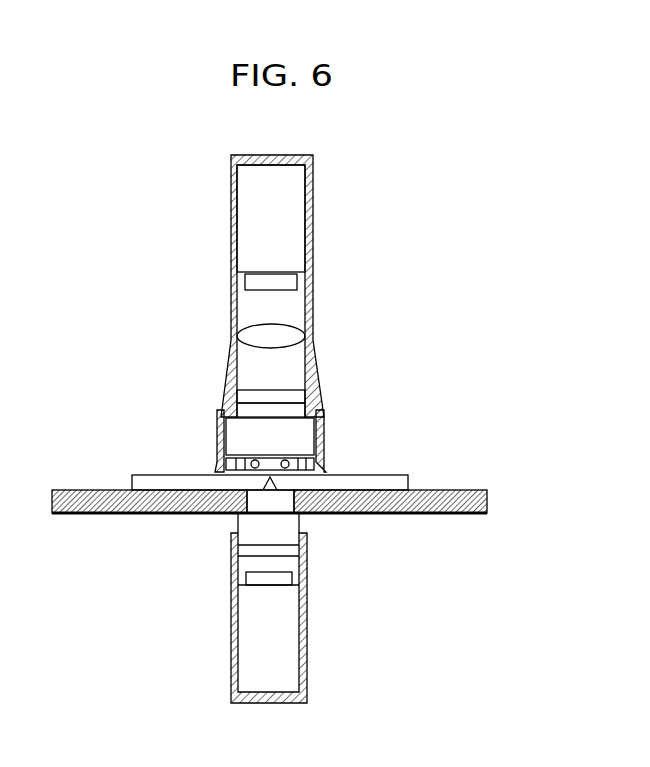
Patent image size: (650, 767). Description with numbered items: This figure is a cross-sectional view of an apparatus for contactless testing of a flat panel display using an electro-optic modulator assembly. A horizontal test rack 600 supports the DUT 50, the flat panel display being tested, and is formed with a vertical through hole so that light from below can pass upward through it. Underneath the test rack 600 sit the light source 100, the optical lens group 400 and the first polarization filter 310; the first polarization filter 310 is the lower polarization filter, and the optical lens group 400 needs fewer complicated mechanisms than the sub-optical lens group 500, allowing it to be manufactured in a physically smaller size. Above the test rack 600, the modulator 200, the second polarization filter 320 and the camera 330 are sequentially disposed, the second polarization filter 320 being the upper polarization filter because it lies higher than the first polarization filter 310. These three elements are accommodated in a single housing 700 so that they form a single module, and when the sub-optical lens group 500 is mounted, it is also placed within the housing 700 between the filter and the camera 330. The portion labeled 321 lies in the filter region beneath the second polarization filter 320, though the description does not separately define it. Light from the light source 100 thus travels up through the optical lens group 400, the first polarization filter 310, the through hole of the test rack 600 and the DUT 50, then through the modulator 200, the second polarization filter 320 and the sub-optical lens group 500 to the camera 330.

The housing 700 is at (313, 190).
The camera 330 is at (281, 252).
The sub-optical lens group 500 is at (245, 332).
The second polarization filter 320 is at (298, 395).
The lower holder portion 321 is at (242, 408).
The modulator 200 is at (294, 447).
The DUT 50 is at (132, 478).
The test rack 600 is at (460, 492).
The optical lens group 400 is at (245, 528).
The first polarization filter 310 is at (300, 552).
The light source 100 is at (285, 660).